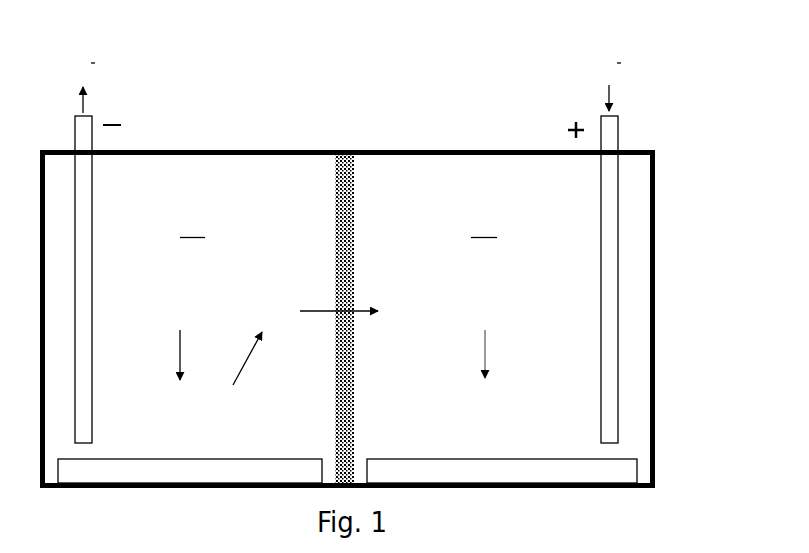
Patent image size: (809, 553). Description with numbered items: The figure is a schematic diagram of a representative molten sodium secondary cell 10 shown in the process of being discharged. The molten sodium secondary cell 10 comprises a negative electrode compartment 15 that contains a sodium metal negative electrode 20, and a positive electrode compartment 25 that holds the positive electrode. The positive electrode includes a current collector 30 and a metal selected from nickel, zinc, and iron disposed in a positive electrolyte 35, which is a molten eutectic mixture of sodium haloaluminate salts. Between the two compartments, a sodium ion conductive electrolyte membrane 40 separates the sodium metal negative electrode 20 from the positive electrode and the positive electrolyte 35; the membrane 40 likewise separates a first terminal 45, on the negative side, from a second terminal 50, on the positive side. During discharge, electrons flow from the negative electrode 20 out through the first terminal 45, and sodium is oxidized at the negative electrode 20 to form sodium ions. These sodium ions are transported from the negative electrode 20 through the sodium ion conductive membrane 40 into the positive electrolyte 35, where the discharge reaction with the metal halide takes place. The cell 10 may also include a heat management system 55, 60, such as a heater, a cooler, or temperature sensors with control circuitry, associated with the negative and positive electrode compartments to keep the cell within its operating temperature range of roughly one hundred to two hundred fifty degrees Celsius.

The molten sodium secondary cell 10 is at (236, 106).
The negative electrode compartment 15 is at (187, 138).
The sodium metal negative electrode 20 is at (192, 226).
The positive electrode compartment 25 is at (493, 138).
The current collector 30 is at (618, 232).
The positive electrolyte 35 is at (484, 226).
The sodium ion conductive electrolyte membrane 40 is at (335, 188).
The first terminal 45 is at (75, 135).
The second terminal 50 is at (618, 137).
The heat management system 55 is at (116, 477).
The heat management system 60 is at (582, 477).